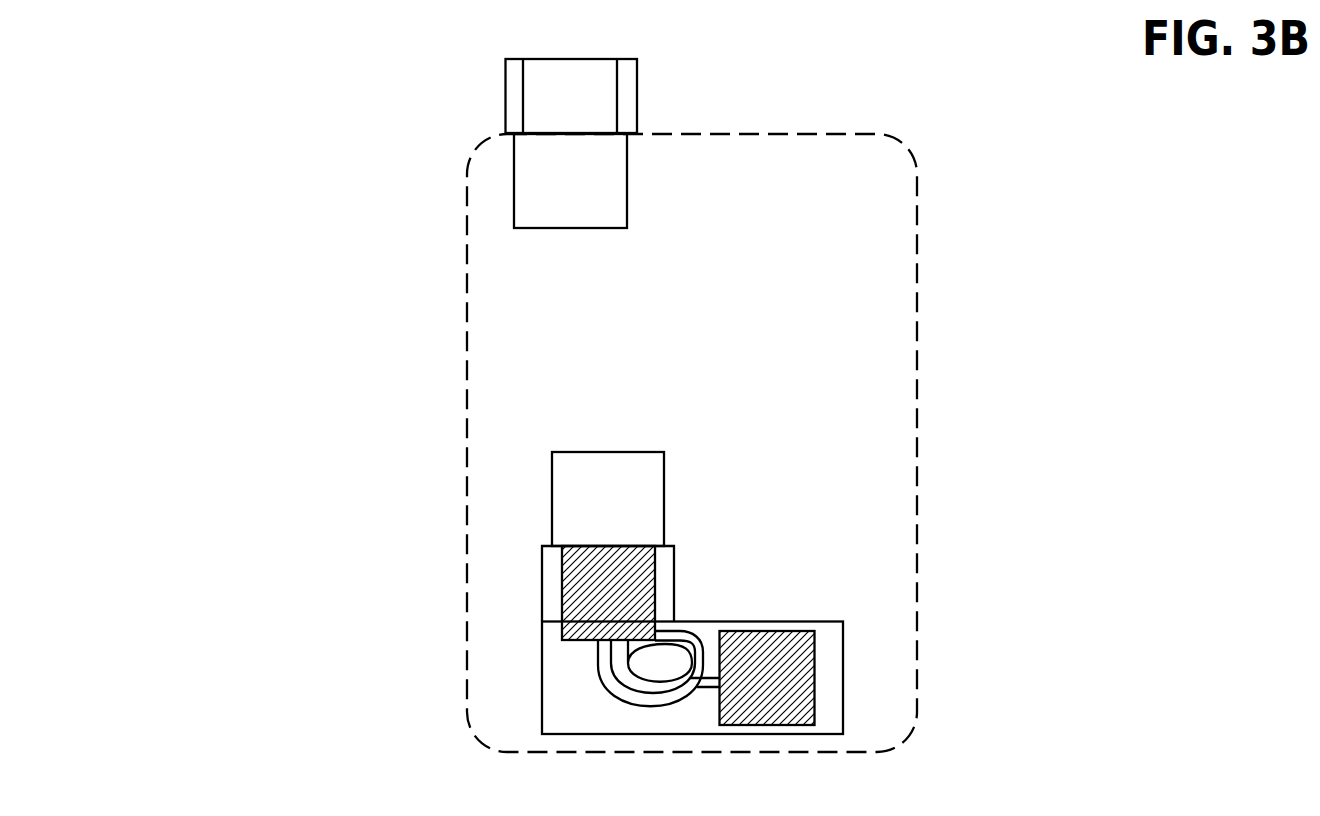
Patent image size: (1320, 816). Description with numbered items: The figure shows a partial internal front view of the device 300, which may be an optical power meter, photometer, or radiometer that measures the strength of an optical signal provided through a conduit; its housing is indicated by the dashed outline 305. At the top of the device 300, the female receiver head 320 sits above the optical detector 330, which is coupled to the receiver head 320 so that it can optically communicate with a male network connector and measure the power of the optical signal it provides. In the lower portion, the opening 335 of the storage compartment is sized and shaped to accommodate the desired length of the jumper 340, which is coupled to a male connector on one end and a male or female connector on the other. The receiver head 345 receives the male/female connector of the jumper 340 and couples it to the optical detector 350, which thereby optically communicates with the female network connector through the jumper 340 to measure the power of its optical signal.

The device 300 is at (205, 50).
The housing 305 is at (467, 451).
The female receiver head 320 is at (492, 94).
The optical detector 330 is at (592, 192).
The opening 335 is at (542, 677).
The jumper 340 is at (781, 668).
The receiver head 345 is at (529, 583).
The optical detector 350 is at (628, 512).